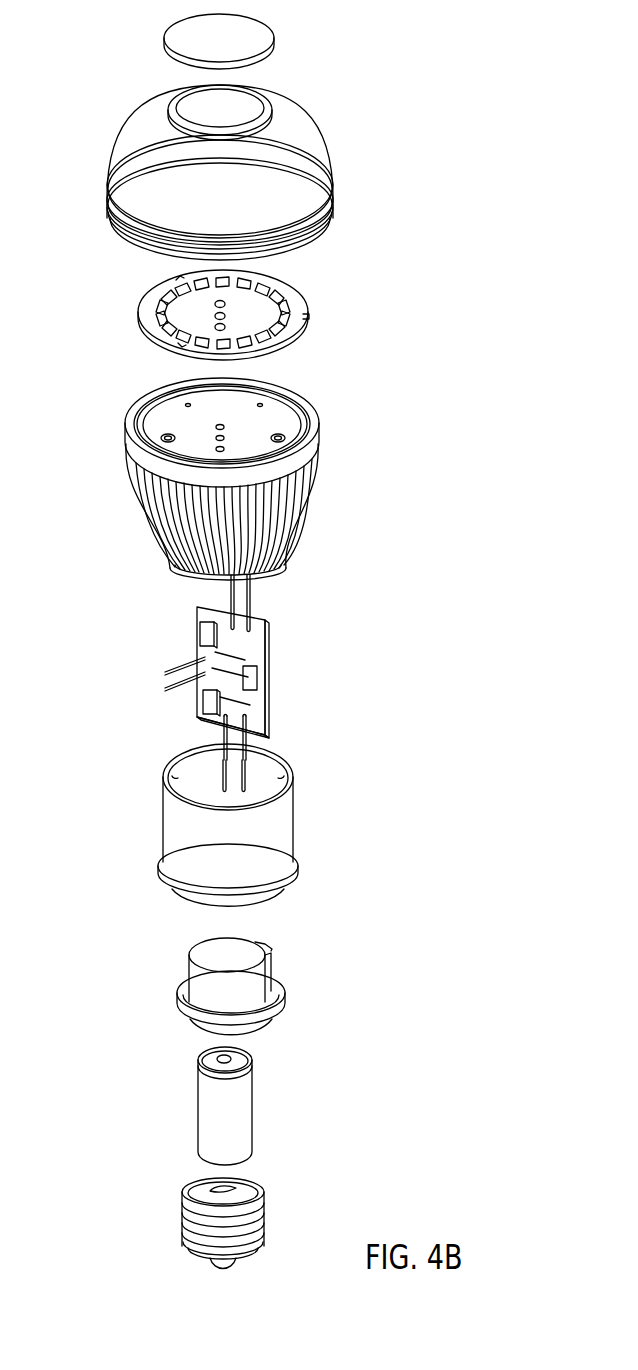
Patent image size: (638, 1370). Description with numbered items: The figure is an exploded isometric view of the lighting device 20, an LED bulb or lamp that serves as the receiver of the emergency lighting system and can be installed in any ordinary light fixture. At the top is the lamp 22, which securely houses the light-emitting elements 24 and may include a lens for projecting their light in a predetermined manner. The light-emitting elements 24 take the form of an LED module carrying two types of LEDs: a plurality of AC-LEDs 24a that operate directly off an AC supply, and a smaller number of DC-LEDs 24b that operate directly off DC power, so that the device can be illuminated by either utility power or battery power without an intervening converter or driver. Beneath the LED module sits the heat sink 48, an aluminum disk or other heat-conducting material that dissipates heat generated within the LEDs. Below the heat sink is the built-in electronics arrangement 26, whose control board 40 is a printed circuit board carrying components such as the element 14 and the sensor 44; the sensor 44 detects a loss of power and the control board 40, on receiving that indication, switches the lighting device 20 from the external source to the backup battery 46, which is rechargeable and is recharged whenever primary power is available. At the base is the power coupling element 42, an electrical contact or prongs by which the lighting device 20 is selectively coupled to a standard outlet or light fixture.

The lighting device 20 is at (450, 131).
The lamp 22 is at (300, 132).
The light-emitting elements 24 is at (230, 313).
The AC-LEDs 24a is at (174, 294).
The DC-LEDs 24b is at (241, 292).
The heat sink 48 is at (248, 427).
The electronics arrangement 26 is at (256, 667).
The circuit component 14 is at (207, 633).
The control board 40 is at (250, 649).
The sensor 44 is at (210, 700).
The battery 46 is at (228, 1130).
The power coupling element 42 is at (215, 1268).